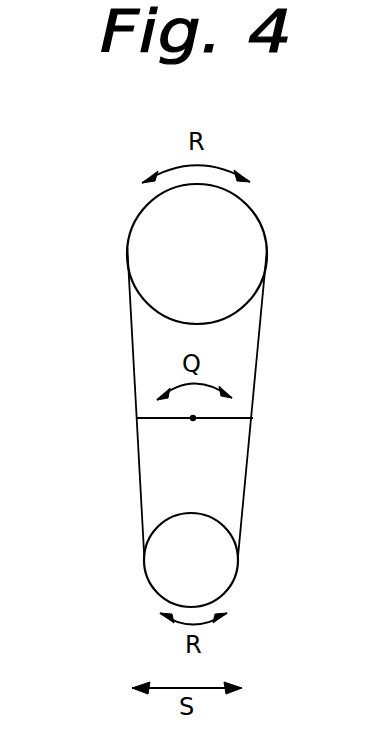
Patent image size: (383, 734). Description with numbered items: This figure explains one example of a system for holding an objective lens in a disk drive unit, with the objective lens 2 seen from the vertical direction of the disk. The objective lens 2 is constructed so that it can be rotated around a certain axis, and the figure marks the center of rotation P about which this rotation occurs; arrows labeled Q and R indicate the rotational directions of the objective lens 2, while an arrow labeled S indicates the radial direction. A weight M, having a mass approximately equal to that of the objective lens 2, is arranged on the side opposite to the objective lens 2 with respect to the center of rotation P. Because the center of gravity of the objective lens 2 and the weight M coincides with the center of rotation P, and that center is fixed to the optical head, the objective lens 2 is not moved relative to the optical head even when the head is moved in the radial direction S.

The objective lens 2 is at (250, 243).
The center of rotation P is at (198, 425).
The weight M is at (191, 560).